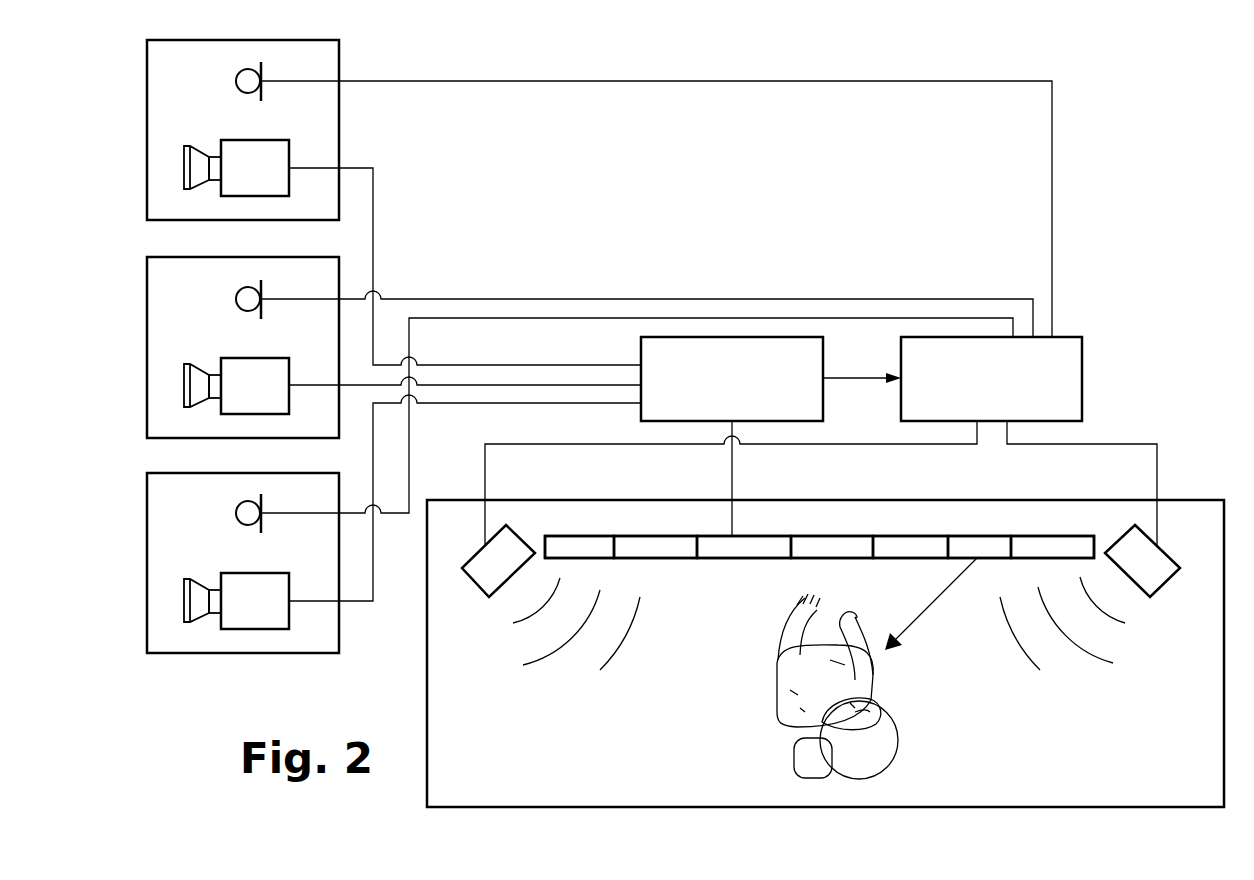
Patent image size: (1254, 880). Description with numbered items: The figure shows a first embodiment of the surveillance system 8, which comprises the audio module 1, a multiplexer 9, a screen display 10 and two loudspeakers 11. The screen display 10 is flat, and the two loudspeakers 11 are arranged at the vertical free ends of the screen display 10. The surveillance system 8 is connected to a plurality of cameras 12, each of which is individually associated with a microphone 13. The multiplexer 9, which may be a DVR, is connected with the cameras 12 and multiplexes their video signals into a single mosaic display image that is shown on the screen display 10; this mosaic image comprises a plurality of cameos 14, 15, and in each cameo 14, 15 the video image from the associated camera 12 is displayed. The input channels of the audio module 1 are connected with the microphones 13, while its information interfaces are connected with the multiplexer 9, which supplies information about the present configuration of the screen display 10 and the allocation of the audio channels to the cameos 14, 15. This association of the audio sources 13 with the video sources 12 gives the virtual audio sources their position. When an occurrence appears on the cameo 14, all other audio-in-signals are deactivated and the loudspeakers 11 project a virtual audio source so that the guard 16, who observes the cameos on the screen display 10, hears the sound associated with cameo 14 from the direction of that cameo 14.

The audio module 1 is at (999, 393).
The surveillance system 8 is at (1172, 368).
The multiplexer 9 is at (740, 393).
The screen display 10 is at (755, 560).
The loudspeaker 11 is at (493, 575).
The camera 12 is at (247, 157).
The microphone 13 is at (245, 82).
The cameo 14 is at (976, 545).
The cameo 15 is at (580, 545).
The guard 16 is at (872, 750).